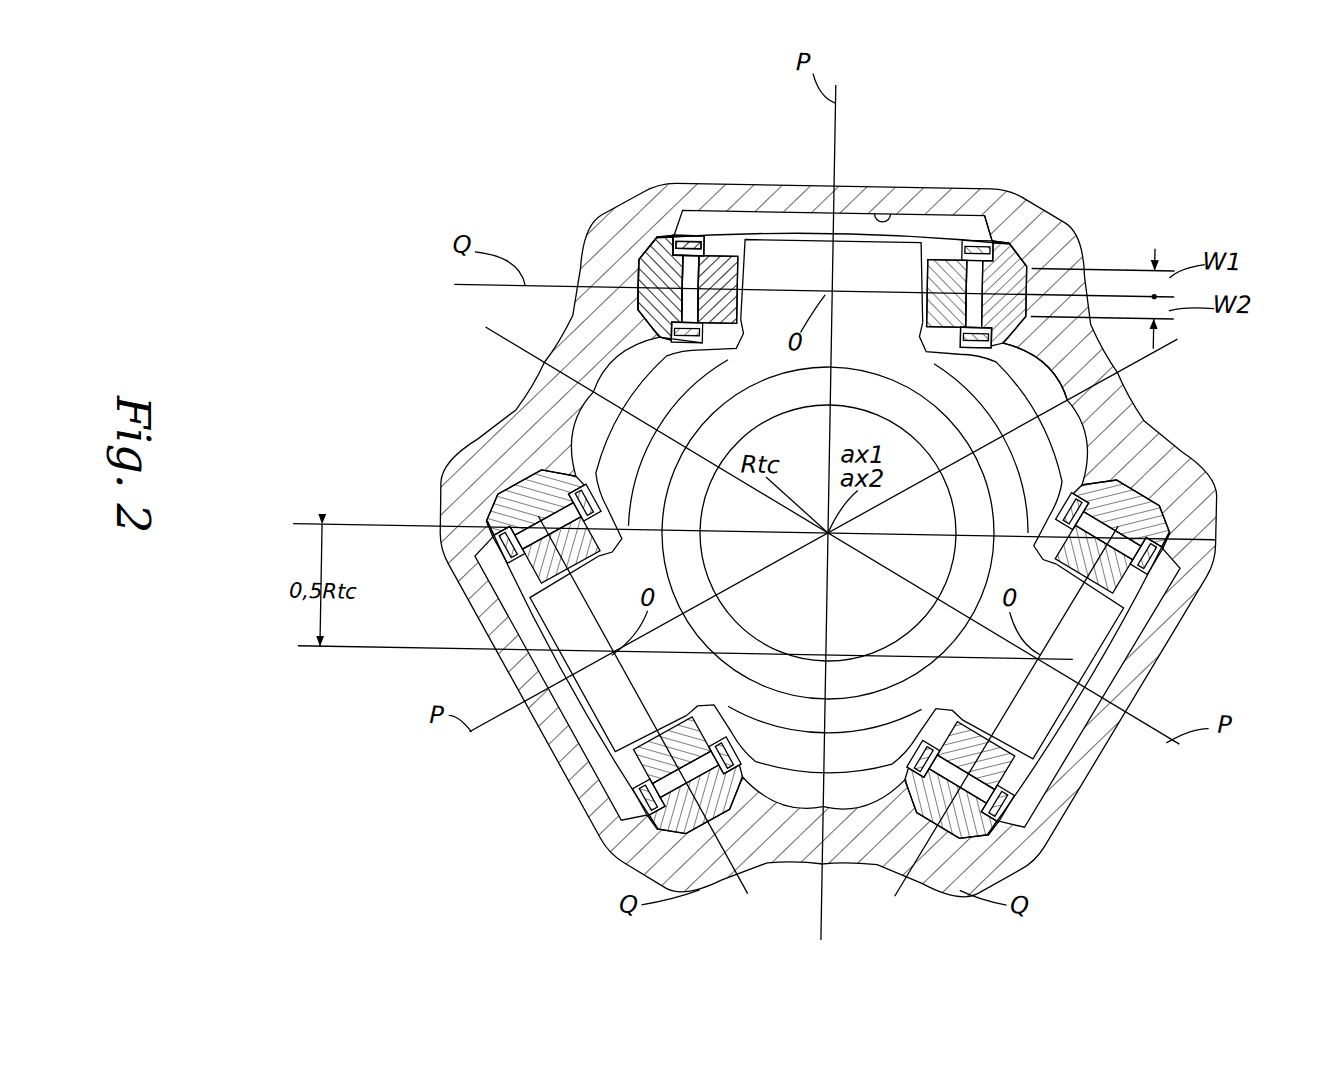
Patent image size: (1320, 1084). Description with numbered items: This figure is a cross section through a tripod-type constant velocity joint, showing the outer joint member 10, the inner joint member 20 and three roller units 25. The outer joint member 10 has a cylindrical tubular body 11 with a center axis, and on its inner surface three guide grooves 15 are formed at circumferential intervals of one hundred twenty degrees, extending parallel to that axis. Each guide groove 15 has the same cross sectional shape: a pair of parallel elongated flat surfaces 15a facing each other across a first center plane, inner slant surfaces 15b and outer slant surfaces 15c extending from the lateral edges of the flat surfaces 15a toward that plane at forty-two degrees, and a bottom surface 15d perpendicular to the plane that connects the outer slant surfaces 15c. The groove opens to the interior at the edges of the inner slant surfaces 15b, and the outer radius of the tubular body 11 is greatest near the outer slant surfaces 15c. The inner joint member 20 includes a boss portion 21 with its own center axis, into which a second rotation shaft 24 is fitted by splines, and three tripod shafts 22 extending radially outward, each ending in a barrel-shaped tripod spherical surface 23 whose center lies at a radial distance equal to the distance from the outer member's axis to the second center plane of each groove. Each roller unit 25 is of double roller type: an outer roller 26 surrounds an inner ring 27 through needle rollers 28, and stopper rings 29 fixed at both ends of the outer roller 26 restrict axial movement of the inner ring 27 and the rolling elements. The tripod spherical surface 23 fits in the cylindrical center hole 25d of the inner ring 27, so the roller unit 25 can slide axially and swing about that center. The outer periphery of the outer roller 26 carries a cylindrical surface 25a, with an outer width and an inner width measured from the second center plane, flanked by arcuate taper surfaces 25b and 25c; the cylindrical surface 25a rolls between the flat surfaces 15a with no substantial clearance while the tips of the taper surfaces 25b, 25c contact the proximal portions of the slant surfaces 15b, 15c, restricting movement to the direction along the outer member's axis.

The outer joint member 10 is at (1163, 431).
The cylindrical tubular body 11 is at (1195, 504).
The guide groove 15 is at (854, 205).
The elongated flat surface 15a is at (1008, 220).
The inner slant surface 15b is at (1032, 355).
The outer slant surface 15c is at (982, 224).
The bottom surface 15d is at (879, 205).
The inner joint member 20 is at (628, 478).
The boss portion 21 is at (846, 720).
The tripod shaft 22 is at (800, 236).
The tripod spherical surface 23 is at (930, 240).
The second rotation shaft 24 is at (639, 458).
The roller unit 25 is at (629, 278).
The cylindrical surface 25a is at (630, 303).
The taper surface 25b is at (614, 346).
The taper surface 25c is at (685, 254).
The cylindrical center hole 25d is at (926, 322).
The outer roller 26 is at (658, 262).
The inner ring 27 is at (710, 266).
The needle rollers 28 is at (667, 248).
The stopper ring 29 is at (685, 250).